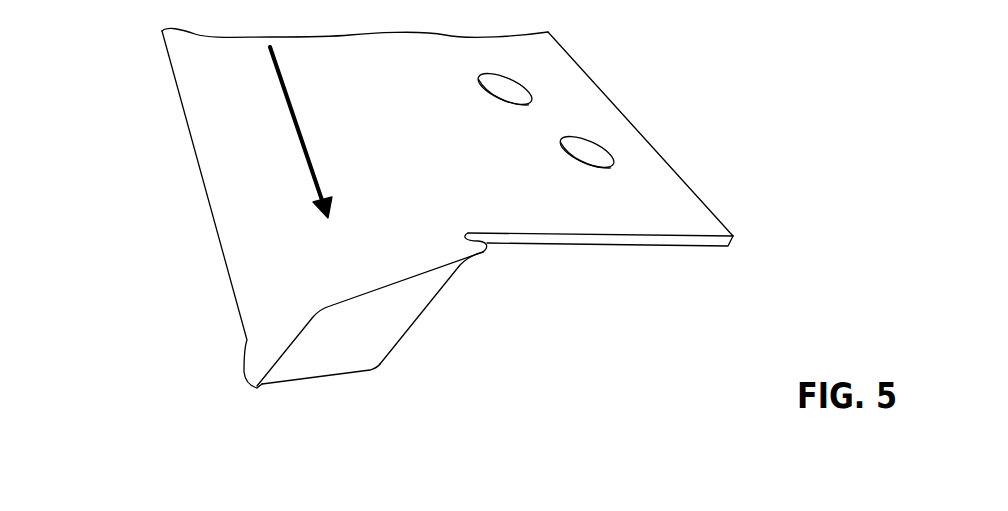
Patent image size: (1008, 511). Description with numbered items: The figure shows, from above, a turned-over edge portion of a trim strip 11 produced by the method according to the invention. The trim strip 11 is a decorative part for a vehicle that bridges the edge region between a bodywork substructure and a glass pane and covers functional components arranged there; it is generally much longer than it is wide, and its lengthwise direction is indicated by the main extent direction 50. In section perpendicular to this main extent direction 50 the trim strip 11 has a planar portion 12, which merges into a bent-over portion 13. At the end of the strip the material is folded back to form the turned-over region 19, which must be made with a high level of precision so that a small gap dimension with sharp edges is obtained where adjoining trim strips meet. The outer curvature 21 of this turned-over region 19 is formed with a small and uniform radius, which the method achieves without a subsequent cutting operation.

The trim strip 11 is at (128, 201).
The planar portion 12 is at (665, 185).
The bent-over portion 13 is at (260, 255).
The turned-over region 19 is at (307, 355).
The outer curvature 21 is at (360, 296).
The main extent direction 50 is at (292, 97).